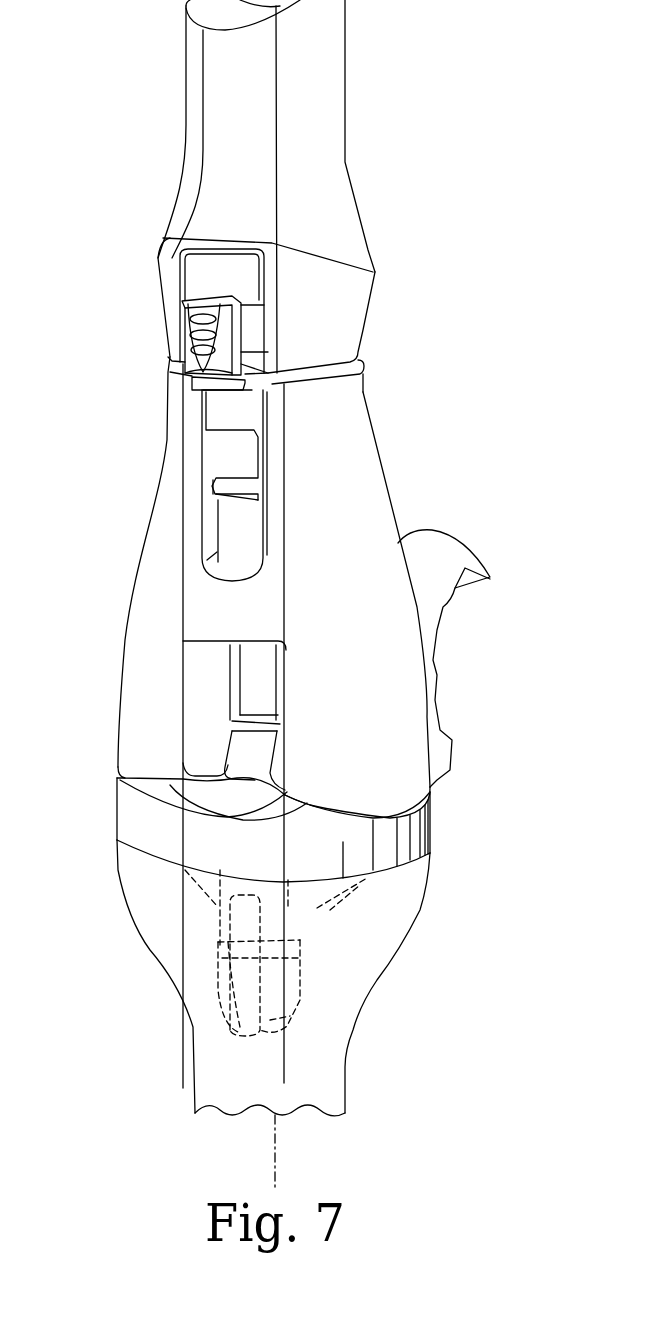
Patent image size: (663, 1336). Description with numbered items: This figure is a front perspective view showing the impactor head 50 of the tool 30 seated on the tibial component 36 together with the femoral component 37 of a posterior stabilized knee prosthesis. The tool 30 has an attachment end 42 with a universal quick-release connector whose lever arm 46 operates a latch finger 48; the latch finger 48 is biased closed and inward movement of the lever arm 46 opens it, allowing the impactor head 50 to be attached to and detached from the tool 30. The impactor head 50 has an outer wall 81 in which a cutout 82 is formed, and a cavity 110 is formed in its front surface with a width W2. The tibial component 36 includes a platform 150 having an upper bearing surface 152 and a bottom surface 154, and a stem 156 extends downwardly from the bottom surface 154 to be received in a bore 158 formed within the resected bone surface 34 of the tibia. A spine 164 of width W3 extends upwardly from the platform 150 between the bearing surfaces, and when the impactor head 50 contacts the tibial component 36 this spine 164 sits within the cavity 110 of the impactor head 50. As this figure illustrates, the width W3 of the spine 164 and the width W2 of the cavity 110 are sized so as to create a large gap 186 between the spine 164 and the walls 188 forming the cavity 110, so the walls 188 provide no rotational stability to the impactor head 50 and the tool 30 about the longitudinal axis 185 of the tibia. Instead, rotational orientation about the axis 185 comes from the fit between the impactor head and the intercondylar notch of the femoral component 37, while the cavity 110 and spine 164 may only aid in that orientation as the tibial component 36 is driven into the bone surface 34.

The tool 30 is at (335, 72).
The attachment end 42 is at (357, 322).
The lever arm 46 is at (188, 327).
The latch finger 48 is at (250, 474).
The impactor head 50 is at (418, 411).
The femoral component 37 is at (499, 546).
The outer wall 81 is at (183, 469).
The cutout 82 is at (229, 540).
The cavity 110 is at (204, 643).
The walls 188 is at (210, 665).
The gap 186 is at (211, 715).
The spine 164 is at (272, 756).
The upper bearing surface 152 is at (340, 810).
The tibial component 36 is at (108, 808).
The platform 150 is at (425, 822).
The bottom surface 154 is at (412, 870).
The bone surface 34 is at (135, 888).
The bore 158 is at (220, 958).
The stem 156 is at (290, 968).
The width of the spine W3 is at (305, 613).
The width of the cavity W2 is at (284, 1068).
The longitudinal axis 185 is at (276, 1150).